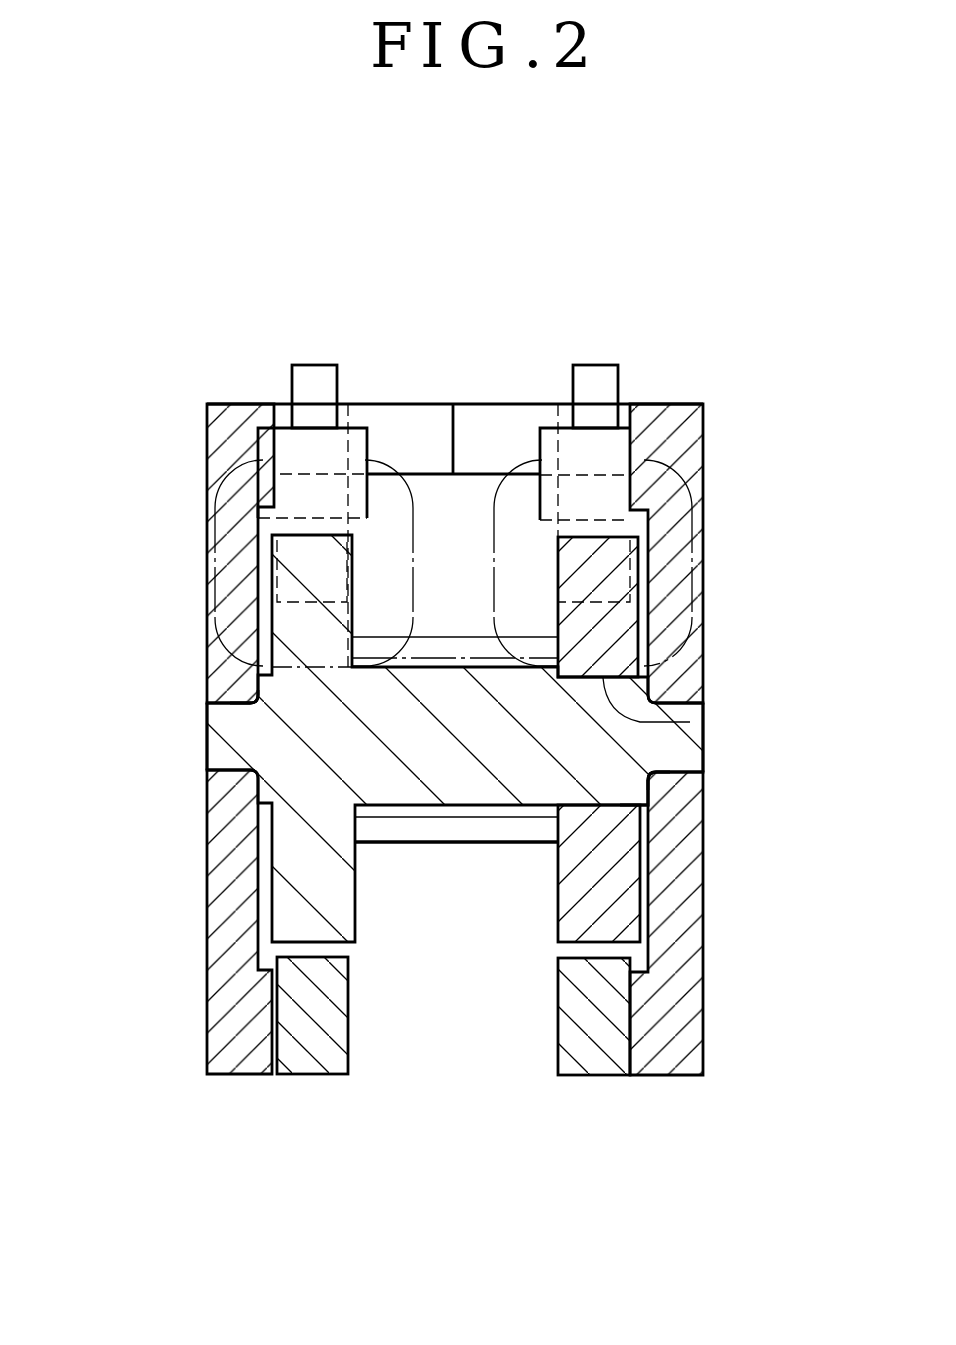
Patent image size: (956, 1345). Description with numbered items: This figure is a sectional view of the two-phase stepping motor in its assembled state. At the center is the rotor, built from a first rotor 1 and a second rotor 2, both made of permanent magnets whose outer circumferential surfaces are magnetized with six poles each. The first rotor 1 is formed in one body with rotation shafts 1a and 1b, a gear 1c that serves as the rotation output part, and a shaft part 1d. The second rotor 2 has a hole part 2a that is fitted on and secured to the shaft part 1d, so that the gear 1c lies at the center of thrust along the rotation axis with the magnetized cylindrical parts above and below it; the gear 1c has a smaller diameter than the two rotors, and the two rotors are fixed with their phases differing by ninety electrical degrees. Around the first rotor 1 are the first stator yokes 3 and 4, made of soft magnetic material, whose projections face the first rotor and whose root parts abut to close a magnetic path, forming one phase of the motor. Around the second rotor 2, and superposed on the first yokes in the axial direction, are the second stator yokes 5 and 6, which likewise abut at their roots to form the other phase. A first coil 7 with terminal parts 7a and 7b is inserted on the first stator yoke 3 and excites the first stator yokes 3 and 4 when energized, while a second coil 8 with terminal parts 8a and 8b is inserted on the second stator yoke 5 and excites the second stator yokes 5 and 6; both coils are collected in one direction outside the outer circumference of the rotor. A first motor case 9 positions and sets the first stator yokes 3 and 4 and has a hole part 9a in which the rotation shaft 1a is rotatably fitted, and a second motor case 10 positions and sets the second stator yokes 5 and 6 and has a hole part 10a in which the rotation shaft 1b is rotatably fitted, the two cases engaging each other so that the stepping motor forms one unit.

The first rotor 1 is at (480, 682).
The rotation shaft 1a is at (222, 750).
The rotation shaft 1b is at (677, 757).
The gear 1c is at (457, 828).
The shaft part 1d is at (690, 722).
The second rotor 2 is at (678, 861).
The hole part 2a is at (634, 792).
The first stator yoke 3 is at (318, 493).
The first stator yoke 4 is at (317, 1045).
The second stator yoke 5 is at (612, 495).
The second stator yoke 6 is at (592, 1040).
The first coil 7 is at (392, 520).
The terminal part 7a is at (323, 332).
The terminal part 7b is at (312, 377).
The second coil 8 is at (520, 508).
The terminal part 8a is at (641, 328).
The terminal part 8b is at (600, 378).
The first motor case 9 is at (181, 772).
The hole part 9a is at (238, 702).
The second motor case 10 is at (737, 747).
The hole part 10a is at (680, 775).